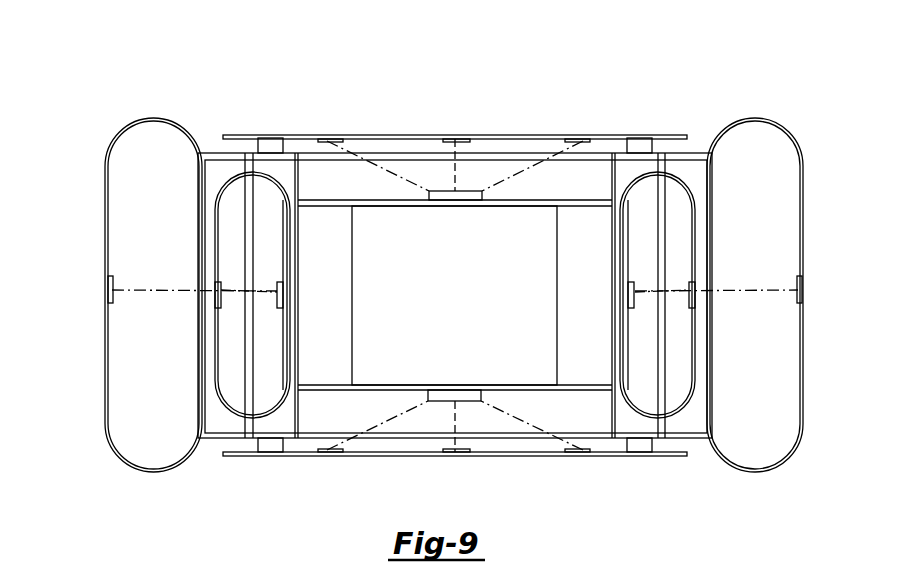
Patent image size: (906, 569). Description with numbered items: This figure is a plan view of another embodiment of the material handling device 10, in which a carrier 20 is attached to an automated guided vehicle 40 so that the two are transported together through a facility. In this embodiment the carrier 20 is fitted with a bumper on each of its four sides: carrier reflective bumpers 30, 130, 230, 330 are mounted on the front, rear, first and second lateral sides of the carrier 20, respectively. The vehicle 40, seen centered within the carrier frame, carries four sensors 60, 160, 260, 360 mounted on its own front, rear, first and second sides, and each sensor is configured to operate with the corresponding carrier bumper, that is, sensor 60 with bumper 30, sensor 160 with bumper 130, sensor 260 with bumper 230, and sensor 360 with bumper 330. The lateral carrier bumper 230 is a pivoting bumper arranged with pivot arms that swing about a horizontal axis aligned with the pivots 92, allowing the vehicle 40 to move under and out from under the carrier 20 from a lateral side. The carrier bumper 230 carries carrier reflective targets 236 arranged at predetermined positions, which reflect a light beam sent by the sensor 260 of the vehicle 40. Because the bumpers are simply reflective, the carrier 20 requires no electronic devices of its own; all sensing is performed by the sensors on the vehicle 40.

The material handling device 10 is at (638, 68).
The carrier 20 is at (700, 153).
The carrier reflective bumper 30 is at (106, 388).
The carrier reflective bumper 130 is at (803, 372).
The automated guided vehicle 40 is at (466, 303).
The sensor 60 is at (277, 290).
The sensor 160 is at (635, 290).
The pivots 92 is at (270, 148).
The carrier reflective bumper 230 is at (378, 458).
The carrier reflective bumper 330 is at (525, 137).
The carrier reflective targets 236 is at (325, 142).
The sensor 260 is at (462, 402).
The sensor 360 is at (445, 190).